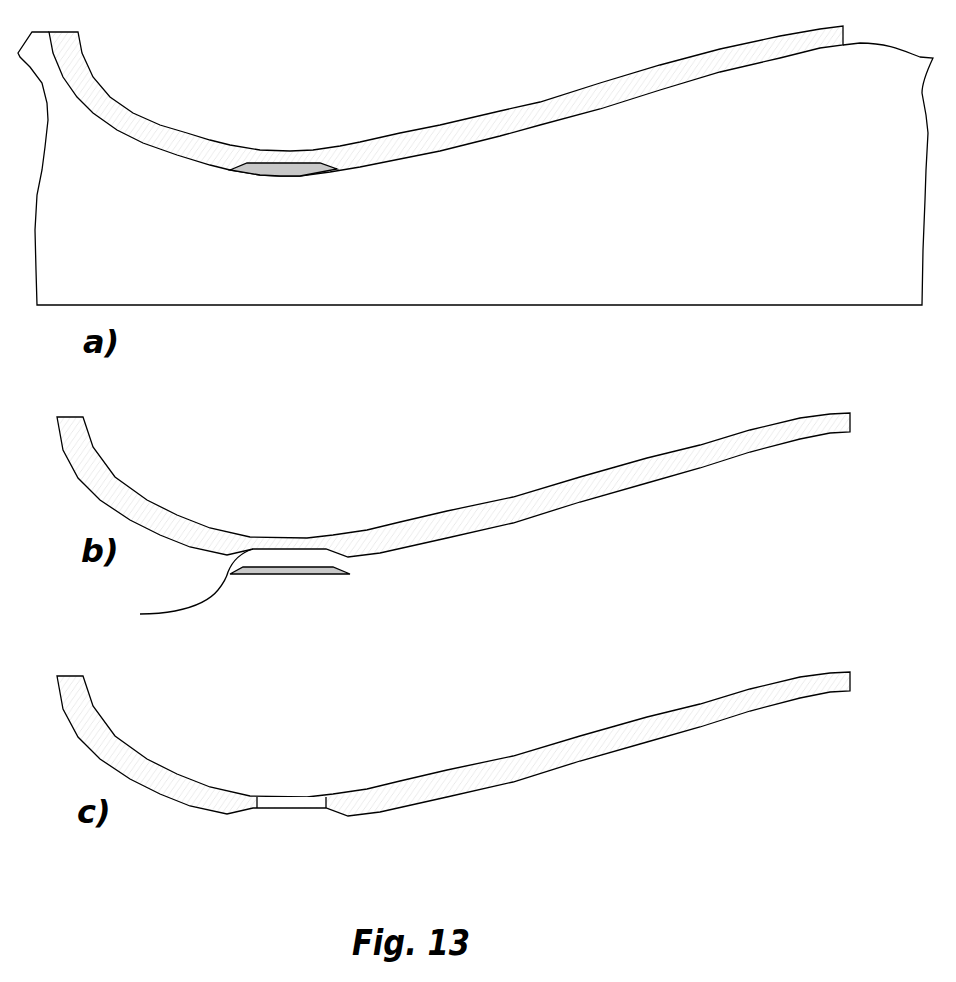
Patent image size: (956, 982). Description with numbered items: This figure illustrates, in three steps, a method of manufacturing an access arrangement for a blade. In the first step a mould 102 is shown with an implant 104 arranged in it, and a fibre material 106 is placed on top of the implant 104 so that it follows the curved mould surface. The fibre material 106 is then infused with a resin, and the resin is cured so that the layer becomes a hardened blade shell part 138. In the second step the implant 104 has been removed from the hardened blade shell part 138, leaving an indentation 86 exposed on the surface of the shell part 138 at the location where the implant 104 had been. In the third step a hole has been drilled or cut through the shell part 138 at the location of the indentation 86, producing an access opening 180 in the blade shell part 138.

The mould 102 is at (378, 252).
The implant 104 is at (276, 172).
The fibre material 106 is at (415, 147).
The hardened blade shell part 138 is at (460, 522).
The indentation 86 is at (183, 587).
The access opening 180 is at (284, 806).